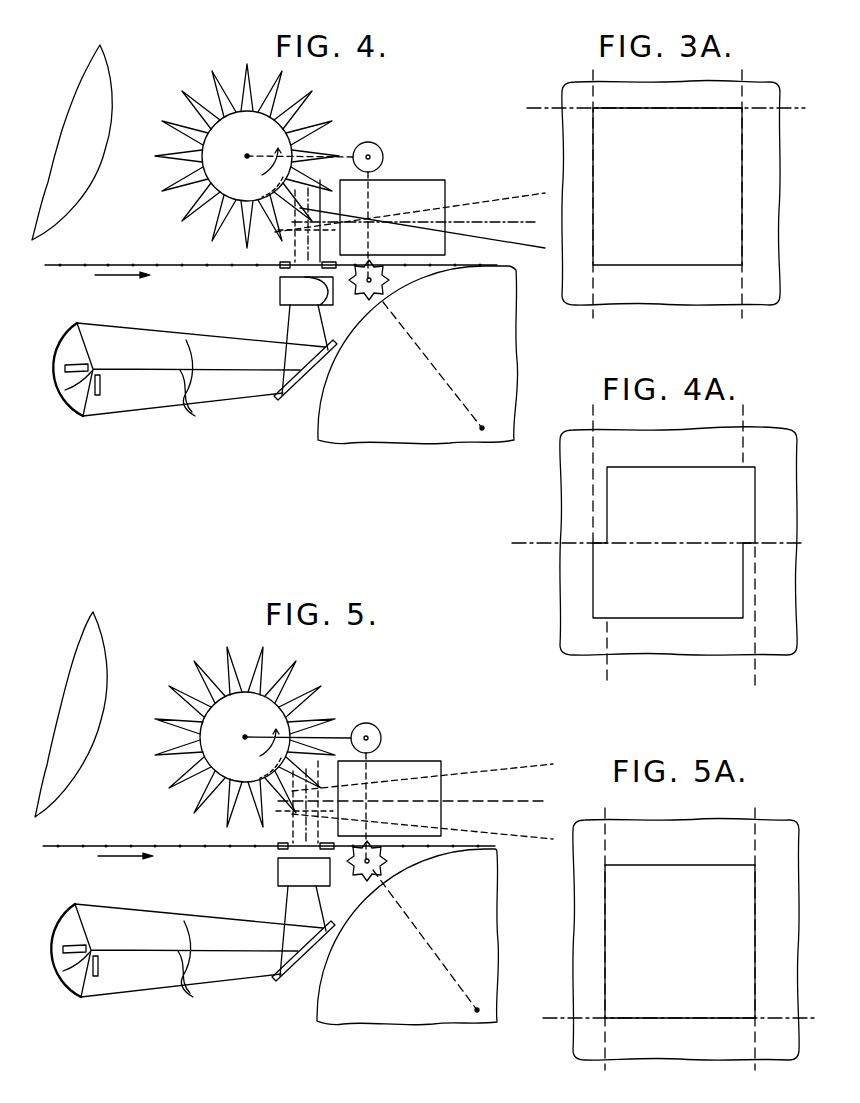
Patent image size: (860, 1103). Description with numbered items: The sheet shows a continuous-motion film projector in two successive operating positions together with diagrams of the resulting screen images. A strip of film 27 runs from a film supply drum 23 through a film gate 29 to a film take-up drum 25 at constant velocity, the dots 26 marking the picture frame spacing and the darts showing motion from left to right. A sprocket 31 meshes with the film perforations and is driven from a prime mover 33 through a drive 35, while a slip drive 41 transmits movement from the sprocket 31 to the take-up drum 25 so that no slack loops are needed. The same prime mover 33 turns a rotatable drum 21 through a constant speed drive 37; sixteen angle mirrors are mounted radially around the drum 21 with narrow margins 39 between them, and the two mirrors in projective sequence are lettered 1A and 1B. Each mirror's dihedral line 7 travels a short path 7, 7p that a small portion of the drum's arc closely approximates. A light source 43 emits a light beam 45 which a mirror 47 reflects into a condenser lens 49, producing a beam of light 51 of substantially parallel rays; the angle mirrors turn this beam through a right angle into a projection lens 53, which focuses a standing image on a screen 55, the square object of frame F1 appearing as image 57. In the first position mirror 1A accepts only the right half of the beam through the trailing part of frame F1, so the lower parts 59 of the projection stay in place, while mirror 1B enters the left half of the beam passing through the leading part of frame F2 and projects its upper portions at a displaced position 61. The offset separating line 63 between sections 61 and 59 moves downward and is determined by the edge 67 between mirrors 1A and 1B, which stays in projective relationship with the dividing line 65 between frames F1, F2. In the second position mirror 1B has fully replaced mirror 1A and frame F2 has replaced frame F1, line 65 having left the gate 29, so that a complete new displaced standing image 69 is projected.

In FIG. 4, the dihedral line 7 is at (270, 194).
In FIG. 5, the dihedral line 7 is at (251, 773).
In FIG. 4, the end of dihedral line path 7p is at (269, 175).
In FIG. 5, the end of dihedral line path 7p is at (263, 757).
In FIG. 4, the angle mirror 1A is at (308, 163).
In FIG. 5, the angle mirror 1A is at (331, 741).
In FIG. 4, the angle mirror 1B is at (260, 246).
In FIG. 5, the angle mirror 1B is at (274, 828).
In FIG. 4, the rotatable drum 21 is at (233, 118).
In FIG. 5, the rotatable drum 21 is at (253, 737).
In FIG. 4, the film supply drum 23 is at (108, 66).
In FIG. 5, the film supply drum 23 is at (106, 636).
In FIG. 4, the film take-up drum 25 is at (503, 273).
In FIG. 5, the film take-up drum 25 is at (418, 937).
In FIG. 4, the dots 26 is at (110, 263).
In FIG. 5, the dots 26 is at (269, 836).
In FIG. 4, the strip of film 27 is at (191, 274).
In FIG. 5, the strip of film 27 is at (60, 859).
In FIG. 4, the film gate 29 is at (280, 268).
In FIG. 5, the film gate 29 is at (284, 855).
In FIG. 4, the sprocket 31 is at (362, 296).
In FIG. 5, the sprocket 31 is at (361, 874).
In FIG. 4, the prime mover 33 is at (379, 146).
In FIG. 5, the prime mover 33 is at (379, 728).
In FIG. 4, the drive 35 is at (371, 188).
In FIG. 5, the drive 35 is at (384, 806).
In FIG. 4, the constant speed drive 37 is at (306, 152).
In FIG. 5, the constant speed drive 37 is at (265, 720).
In FIG. 4, the margins 39 is at (318, 93).
In FIG. 5, the margins 39 is at (336, 669).
In FIG. 4, the slip drive 41 is at (425, 352).
In FIG. 5, the slip drive 41 is at (426, 941).
In FIG. 4, the light source 43 is at (65, 392).
In FIG. 5, the light source 43 is at (175, 950).
In FIG. 4, the light beam 45 is at (198, 384).
In FIG. 5, the light beam 45 is at (193, 968).
In FIG. 4, the mirror 47 is at (290, 394).
In FIG. 5, the mirror 47 is at (303, 961).
In FIG. 4, the condenser lens 49 is at (283, 305).
In FIG. 5, the condenser lens 49 is at (269, 900).
In FIG. 5, the beam of light 51 is at (259, 832).
In FIG. 4, the projection lens 53 is at (418, 185).
In FIG. 5, the projection lens 53 is at (392, 789).
In FIG. 3A, the screen 55 is at (575, 146).
In FIG. 3A, the image 57 is at (593, 217).
In FIG. 4A, the lower parts of projection 59 is at (593, 597).
In FIG. 4A, the displaced image portion 61 is at (607, 503).
In FIG. 3A, the offset separating line 63 is at (544, 88).
In FIG. 4A, the offset separating line 63 is at (528, 543).
In FIG. 5A, the offset separating line 63 is at (556, 1018).
In FIG. 4, the dividing line between frames 65 is at (306, 336).
In FIG. 4, the edge between adjacent mirrors 67 is at (312, 222).
In FIG. 5, the edge between adjacent mirrors 67 is at (414, 802).
In FIG. 5A, the displaced standing image 69 is at (605, 983).
In FIG. 4, the picture frame F1 is at (331, 317).
In FIG. 5, the picture frame F1 is at (304, 917).
In FIG. 4, the picture frame F2 is at (284, 281).
In FIG. 5, the picture frame F2 is at (266, 873).